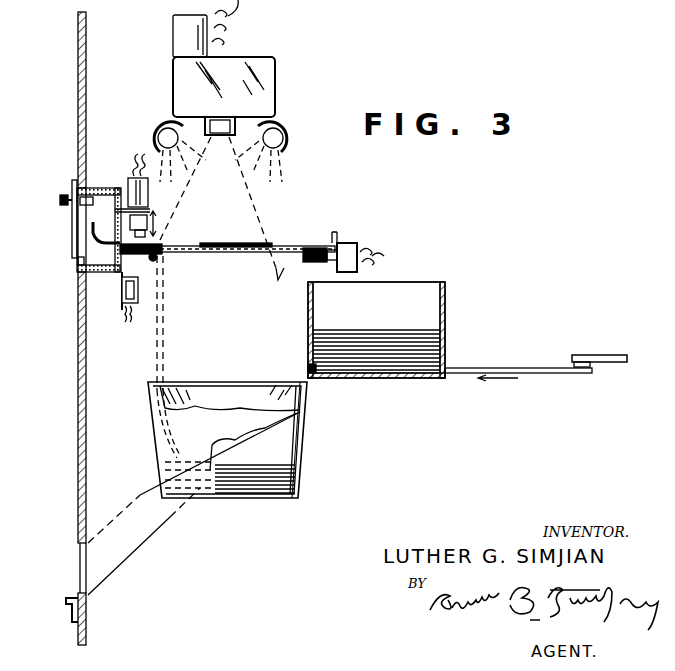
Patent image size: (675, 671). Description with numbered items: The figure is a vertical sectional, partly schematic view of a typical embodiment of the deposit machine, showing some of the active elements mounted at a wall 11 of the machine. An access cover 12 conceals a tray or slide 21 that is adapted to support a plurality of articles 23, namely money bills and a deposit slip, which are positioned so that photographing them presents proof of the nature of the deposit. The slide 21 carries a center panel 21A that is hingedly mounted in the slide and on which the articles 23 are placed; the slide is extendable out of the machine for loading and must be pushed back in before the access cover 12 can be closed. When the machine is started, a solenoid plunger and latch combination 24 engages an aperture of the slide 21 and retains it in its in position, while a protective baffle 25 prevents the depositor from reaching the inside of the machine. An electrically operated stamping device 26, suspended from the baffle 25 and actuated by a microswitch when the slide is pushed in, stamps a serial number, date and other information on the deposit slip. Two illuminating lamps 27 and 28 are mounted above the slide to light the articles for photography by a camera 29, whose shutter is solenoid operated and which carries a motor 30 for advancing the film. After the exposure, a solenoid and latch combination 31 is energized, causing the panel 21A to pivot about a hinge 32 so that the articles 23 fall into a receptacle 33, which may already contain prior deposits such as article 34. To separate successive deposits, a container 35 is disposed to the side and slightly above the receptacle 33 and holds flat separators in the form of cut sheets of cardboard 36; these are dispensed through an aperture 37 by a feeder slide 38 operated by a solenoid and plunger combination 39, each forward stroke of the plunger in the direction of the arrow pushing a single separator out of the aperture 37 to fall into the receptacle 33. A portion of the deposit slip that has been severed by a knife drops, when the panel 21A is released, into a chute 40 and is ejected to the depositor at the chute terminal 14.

The wall 11 is at (78, 64).
The access cover 12 is at (77, 219).
The chute terminal 14 is at (78, 572).
The slide 21 is at (92, 233).
The center panel 21A is at (206, 254).
The articles 23 is at (250, 246).
The solenoid plunger and latch combination 24 is at (122, 290).
The protective baffle 25 is at (100, 188).
The stamping device 26 is at (149, 191).
The illuminating lamp 27 is at (286, 127).
The illuminating lamp 28 is at (159, 127).
The camera 29 is at (257, 67).
The motor 30 is at (186, 33).
The solenoid and latch combination 31 is at (351, 254).
The hinge 32 is at (156, 259).
The receptacle 33 is at (299, 414).
The article 34 is at (300, 471).
The container 35 is at (447, 307).
The cut sheets of cardboard 36 is at (388, 330).
The aperture 37 is at (310, 369).
The feeder slide 38 is at (538, 374).
The solenoid and plunger combination 39 is at (595, 356).
The chute 40 is at (145, 548).